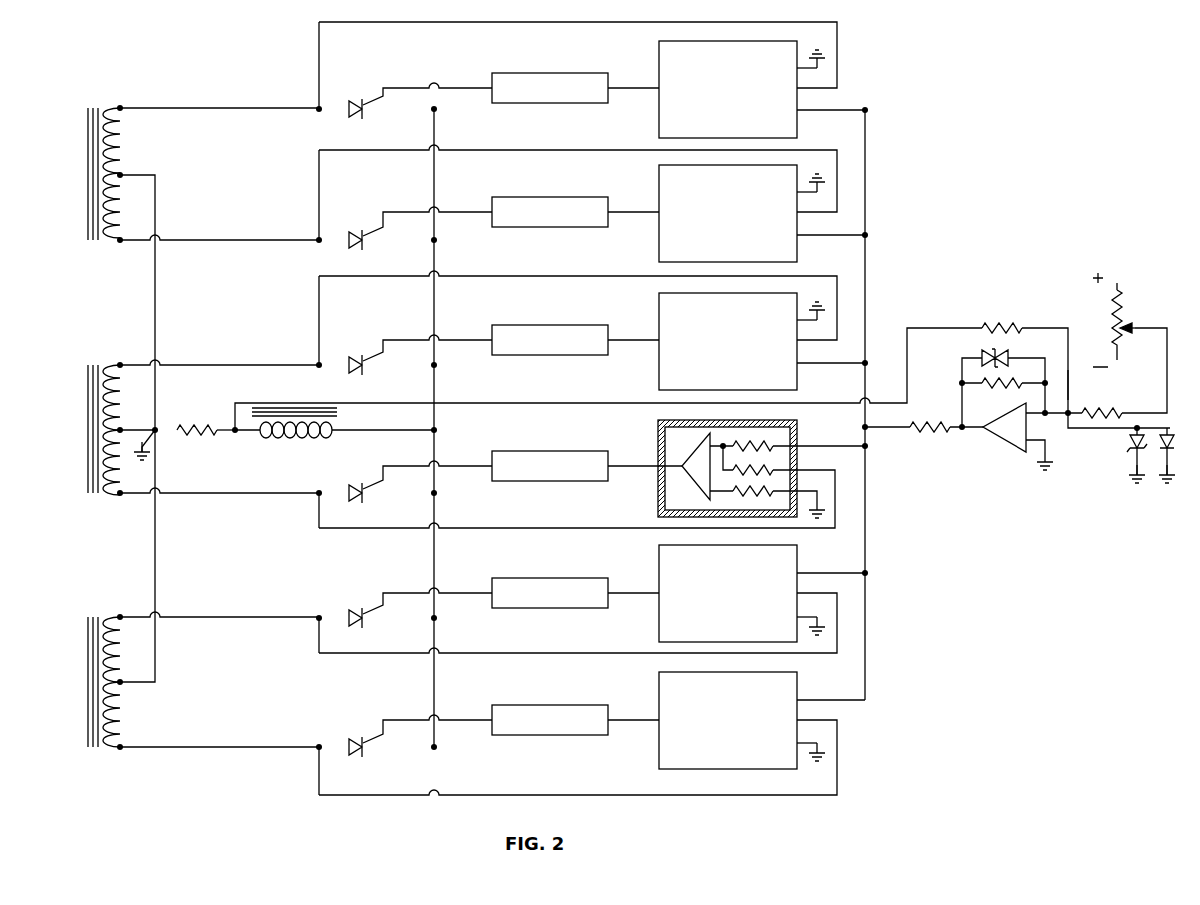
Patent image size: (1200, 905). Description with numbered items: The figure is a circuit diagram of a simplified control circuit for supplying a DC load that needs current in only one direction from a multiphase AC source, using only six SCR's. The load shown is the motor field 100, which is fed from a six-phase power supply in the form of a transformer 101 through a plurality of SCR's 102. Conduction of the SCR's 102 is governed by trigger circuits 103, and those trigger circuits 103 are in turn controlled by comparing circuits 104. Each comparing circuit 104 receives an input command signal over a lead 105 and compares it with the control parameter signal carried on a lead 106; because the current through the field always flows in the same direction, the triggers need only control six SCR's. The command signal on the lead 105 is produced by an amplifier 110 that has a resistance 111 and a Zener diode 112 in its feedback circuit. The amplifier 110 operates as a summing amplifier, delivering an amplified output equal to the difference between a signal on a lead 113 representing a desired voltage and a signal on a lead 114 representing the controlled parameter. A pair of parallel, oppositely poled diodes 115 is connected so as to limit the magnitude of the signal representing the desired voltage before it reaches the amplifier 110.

The motor field 100 is at (292, 404).
The six-phase power supply (transformer) 101 is at (88, 174).
The SCR's 102 is at (351, 99).
The trigger circuits 103 is at (537, 72).
The comparing circuits 104 is at (797, 101).
The lead 105 is at (810, 446).
The lead 106 is at (818, 497).
The amplifier 110 is at (1000, 440).
The resistance 111 is at (1010, 388).
The Zener diode 112 is at (988, 354).
The lead 113 is at (1157, 330).
The lead 114 is at (1069, 383).
The parallel oppositely poled diodes 115 is at (1130, 450).